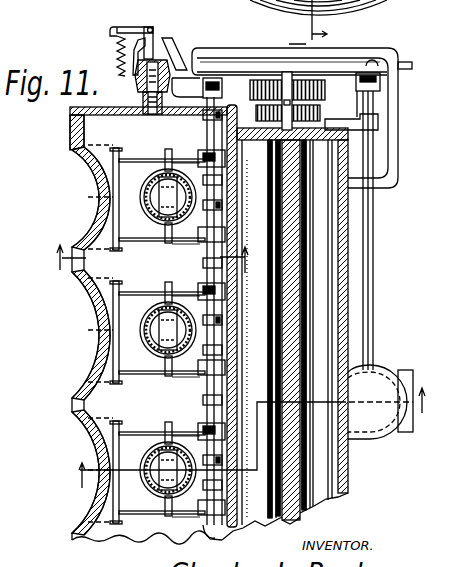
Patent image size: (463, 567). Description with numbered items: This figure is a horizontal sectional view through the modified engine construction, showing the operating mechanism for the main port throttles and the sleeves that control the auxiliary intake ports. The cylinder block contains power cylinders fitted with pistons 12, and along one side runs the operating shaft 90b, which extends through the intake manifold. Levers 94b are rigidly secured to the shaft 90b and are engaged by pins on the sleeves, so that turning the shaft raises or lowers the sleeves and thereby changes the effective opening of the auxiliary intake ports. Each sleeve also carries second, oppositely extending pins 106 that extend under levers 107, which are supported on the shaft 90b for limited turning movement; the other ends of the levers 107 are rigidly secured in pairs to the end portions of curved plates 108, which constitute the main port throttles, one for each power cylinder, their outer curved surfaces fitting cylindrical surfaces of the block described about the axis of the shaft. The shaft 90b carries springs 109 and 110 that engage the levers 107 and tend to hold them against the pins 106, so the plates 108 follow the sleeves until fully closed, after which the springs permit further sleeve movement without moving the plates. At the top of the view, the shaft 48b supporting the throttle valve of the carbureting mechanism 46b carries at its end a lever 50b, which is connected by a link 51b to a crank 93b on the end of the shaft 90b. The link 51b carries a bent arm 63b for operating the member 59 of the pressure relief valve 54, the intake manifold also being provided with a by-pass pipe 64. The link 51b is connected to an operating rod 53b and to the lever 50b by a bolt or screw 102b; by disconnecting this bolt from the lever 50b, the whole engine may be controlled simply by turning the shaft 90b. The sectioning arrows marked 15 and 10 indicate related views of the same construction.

The member of the pressure relief valve 59 is at (139, 28).
The bent arm 63b is at (178, 50).
The crank 93b is at (233, 78).
The by-pass pipe 64 is at (276, 50).
The section line 15 is at (308, 38).
The link 51b is at (329, 70).
The bolt or screw 102b is at (373, 60).
The operating rod 53b is at (405, 62).
The operating shaft 90b is at (219, 96).
The lever 50b is at (361, 82).
The pressure relief valve 54 is at (136, 90).
The levers 107 is at (133, 152).
The pins 106 is at (153, 157).
The spring 109 is at (202, 149).
The curved plates 108 is at (98, 177).
The levers 94b is at (158, 163).
The pistons 12 is at (154, 257).
The spring 110 is at (207, 261).
The shaft 48b is at (374, 280).
The carbureting mechanism 46b is at (413, 349).
The section line 10 is at (252, 438).